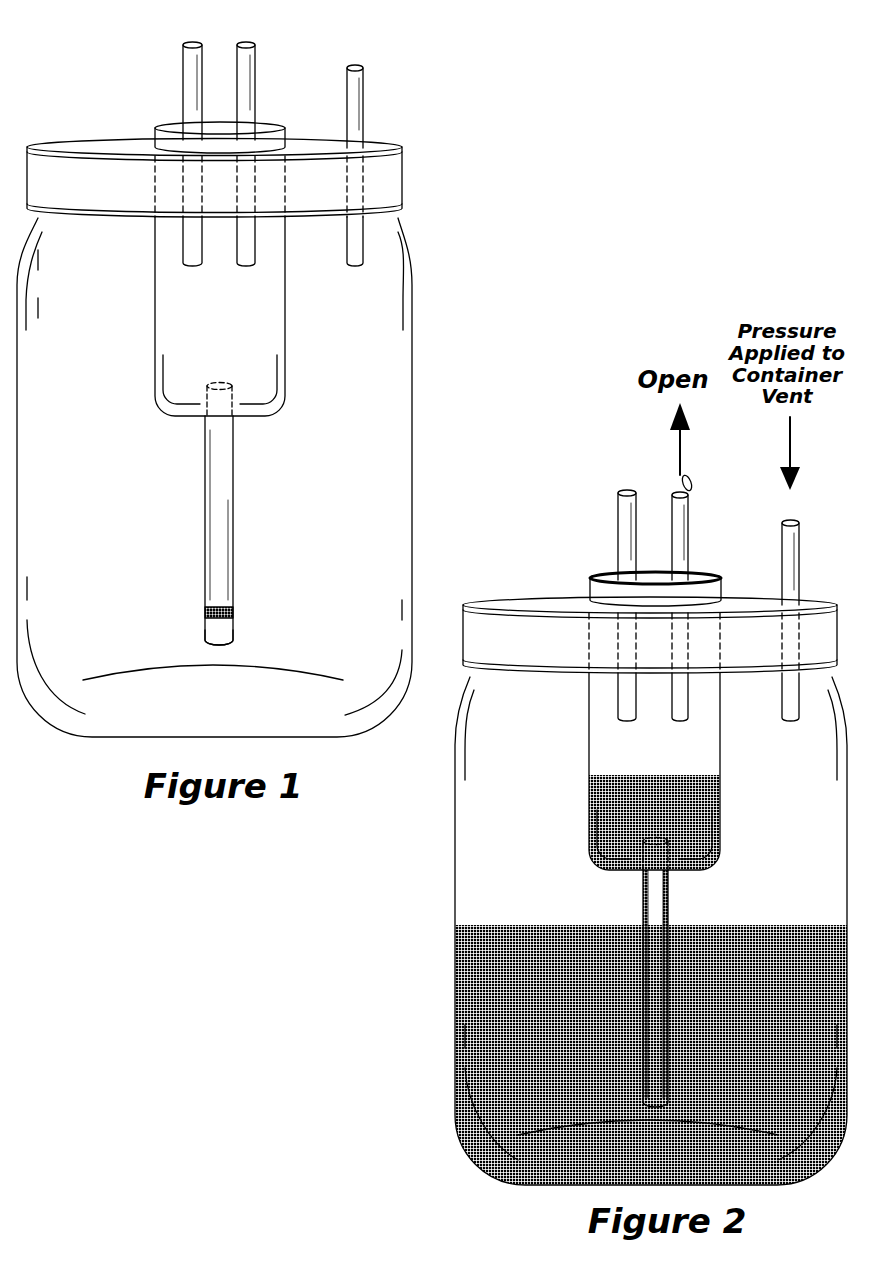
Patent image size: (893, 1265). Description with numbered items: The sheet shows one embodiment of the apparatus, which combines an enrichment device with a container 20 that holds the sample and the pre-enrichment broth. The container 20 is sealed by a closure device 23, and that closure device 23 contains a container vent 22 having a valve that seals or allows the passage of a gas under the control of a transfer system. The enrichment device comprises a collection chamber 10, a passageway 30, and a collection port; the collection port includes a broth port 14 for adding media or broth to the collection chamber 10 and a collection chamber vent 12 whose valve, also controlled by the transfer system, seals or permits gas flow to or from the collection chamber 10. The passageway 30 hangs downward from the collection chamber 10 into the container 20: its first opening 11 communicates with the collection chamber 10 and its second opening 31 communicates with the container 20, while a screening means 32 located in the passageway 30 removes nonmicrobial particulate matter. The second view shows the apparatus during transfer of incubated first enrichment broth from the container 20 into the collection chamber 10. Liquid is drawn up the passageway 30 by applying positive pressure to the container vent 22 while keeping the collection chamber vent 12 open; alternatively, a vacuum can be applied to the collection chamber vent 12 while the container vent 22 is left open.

In FIG. 1, the collection chamber 10 is at (285, 345).
In FIG. 2, the collection chamber 10 is at (720, 802).
In FIG. 1, the first opening 11 is at (215, 382).
In FIG. 1, the collection chamber vent 12 is at (255, 58).
In FIG. 2, the collection chamber vent 12 is at (688, 518).
In FIG. 1, the broth port 14 is at (183, 77).
In FIG. 2, the broth port 14 is at (618, 540).
In FIG. 1, the container 20 is at (410, 387).
In FIG. 2, the container 20 is at (455, 883).
In FIG. 1, the container vent 22 is at (363, 80).
In FIG. 2, the container vent 22 is at (799, 537).
In FIG. 1, the closure device 23 is at (402, 180).
In FIG. 2, the closure device 23 is at (550, 600).
In FIG. 1, the passageway 30 is at (233, 510).
In FIG. 2, the passageway 30 is at (668, 975).
In FIG. 1, the second opening 31 is at (235, 645).
In FIG. 1, the screening means 32 is at (233, 600).